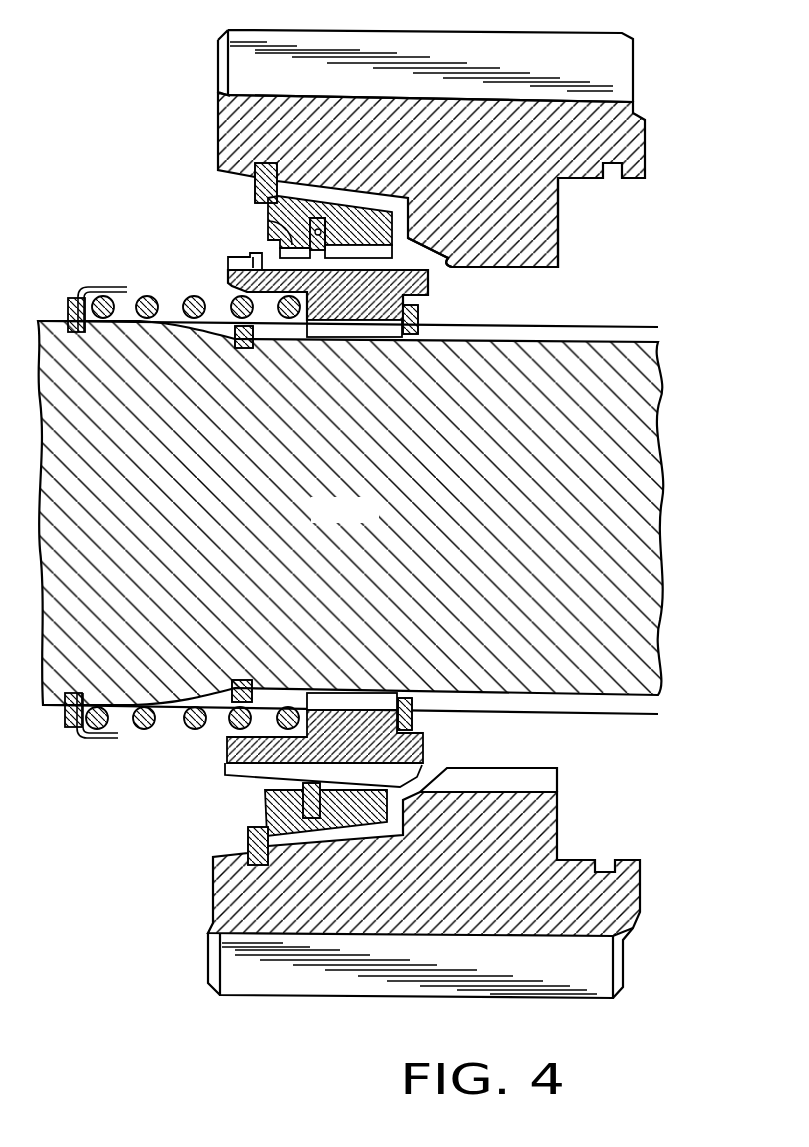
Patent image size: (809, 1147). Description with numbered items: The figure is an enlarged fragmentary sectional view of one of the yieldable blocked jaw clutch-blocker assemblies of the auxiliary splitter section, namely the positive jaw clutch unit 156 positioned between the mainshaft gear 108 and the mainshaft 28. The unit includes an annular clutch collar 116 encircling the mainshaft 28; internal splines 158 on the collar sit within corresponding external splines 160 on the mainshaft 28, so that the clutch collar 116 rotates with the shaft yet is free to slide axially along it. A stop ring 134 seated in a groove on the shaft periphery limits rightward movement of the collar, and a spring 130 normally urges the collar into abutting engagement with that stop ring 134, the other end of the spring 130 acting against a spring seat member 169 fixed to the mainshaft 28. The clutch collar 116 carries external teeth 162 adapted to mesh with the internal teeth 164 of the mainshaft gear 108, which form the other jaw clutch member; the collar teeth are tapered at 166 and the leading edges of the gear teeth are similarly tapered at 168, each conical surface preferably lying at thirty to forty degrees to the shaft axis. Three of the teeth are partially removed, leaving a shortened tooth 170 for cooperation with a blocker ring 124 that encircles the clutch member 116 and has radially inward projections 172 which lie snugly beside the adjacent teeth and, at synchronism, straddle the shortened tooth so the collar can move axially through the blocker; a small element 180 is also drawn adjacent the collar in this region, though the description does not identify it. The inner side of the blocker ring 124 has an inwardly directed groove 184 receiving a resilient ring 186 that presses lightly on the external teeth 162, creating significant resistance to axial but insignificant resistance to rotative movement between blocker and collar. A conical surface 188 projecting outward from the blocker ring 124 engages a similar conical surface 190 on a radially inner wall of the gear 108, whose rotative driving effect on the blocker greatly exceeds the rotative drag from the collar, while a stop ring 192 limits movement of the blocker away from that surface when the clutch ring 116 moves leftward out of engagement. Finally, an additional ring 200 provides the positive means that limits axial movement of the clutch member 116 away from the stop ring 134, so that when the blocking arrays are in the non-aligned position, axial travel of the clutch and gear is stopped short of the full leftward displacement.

The mainshaft 28 is at (350, 513).
The mainshaft gear 108 is at (492, 58).
The clutch collar 116 is at (417, 283).
The blocker ring 124 is at (277, 800).
The spring 130 is at (153, 729).
The stop ring 134 is at (408, 338).
The jaw clutch unit 156 is at (625, 282).
The internal splines 158 is at (340, 328).
The external splines 160 is at (603, 335).
The external teeth 162 is at (373, 738).
The internal teeth 164 is at (550, 257).
The taper 166 is at (413, 777).
The taper 168 is at (447, 266).
The spring seat member 169 is at (72, 732).
The partially removed tooth 170 is at (207, 274).
The radially inward projection 172 is at (268, 215).
The cap 180 is at (249, 257).
The inwardly directed groove 184 is at (323, 237).
The resilient ring 186 is at (290, 252).
The conical surface 188 is at (317, 830).
The conical surface 190 is at (228, 853).
The stop ring 192 is at (258, 866).
The ring 200 is at (245, 352).